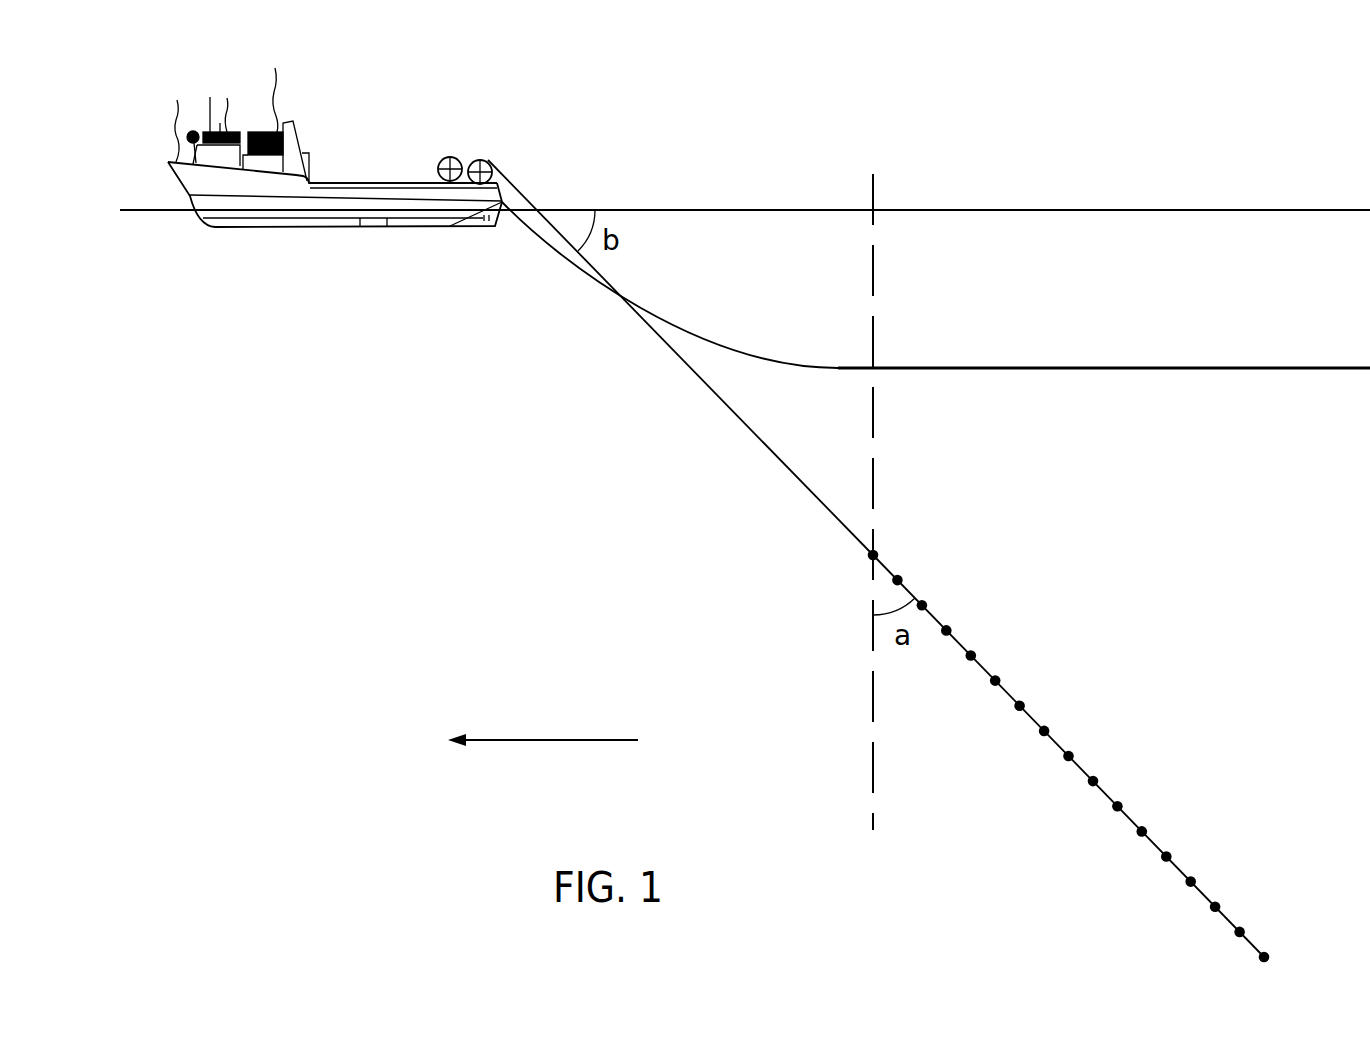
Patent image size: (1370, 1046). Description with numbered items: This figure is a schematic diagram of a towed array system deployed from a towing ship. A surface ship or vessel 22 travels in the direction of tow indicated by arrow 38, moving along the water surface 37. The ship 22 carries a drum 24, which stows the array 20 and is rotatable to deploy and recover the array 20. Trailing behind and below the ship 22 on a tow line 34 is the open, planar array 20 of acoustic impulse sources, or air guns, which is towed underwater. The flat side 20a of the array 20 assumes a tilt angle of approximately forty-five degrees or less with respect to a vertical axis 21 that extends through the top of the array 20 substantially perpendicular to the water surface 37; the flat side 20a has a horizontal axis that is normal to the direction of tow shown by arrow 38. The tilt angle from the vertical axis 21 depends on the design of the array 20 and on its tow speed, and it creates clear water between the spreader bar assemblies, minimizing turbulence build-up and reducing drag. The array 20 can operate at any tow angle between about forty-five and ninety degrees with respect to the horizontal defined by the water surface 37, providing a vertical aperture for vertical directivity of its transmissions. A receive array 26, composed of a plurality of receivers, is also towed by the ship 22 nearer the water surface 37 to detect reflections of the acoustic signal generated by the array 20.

The array 20 is at (1155, 842).
The flat side 20a is at (1091, 786).
The vertical axis 21 is at (872, 689).
The ship 22 is at (303, 228).
The drum 24 is at (487, 159).
The receive array 26 is at (1153, 367).
The tow line 34 is at (758, 427).
The water surface 37 is at (718, 210).
The arrow 38 is at (541, 741).